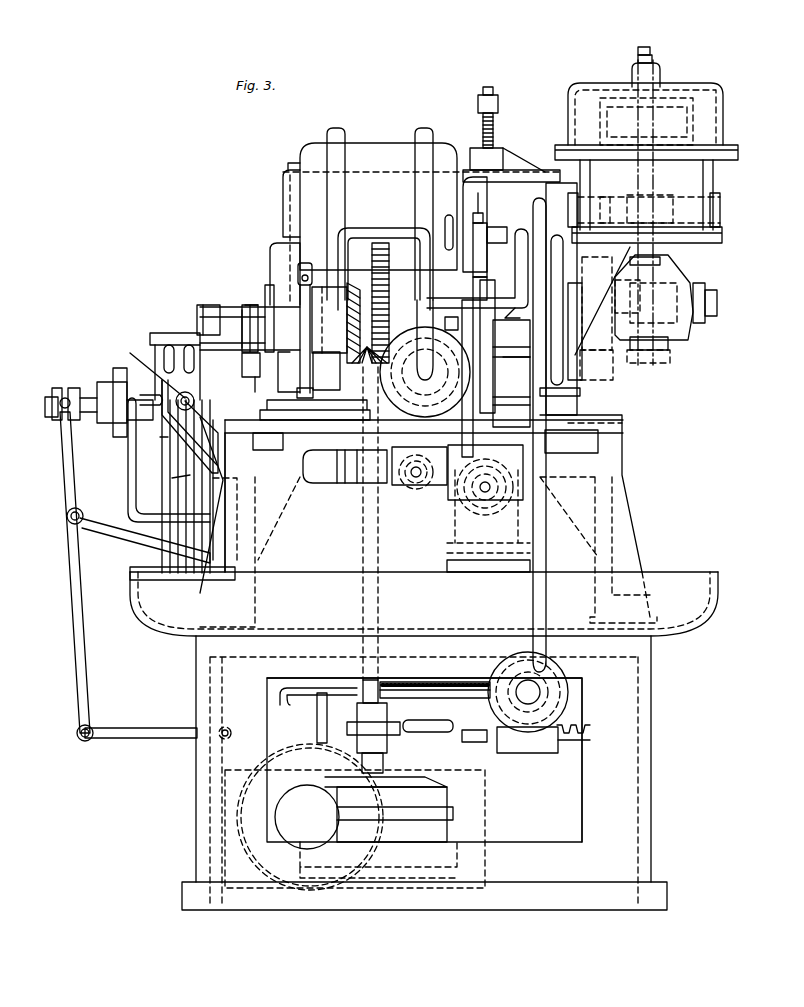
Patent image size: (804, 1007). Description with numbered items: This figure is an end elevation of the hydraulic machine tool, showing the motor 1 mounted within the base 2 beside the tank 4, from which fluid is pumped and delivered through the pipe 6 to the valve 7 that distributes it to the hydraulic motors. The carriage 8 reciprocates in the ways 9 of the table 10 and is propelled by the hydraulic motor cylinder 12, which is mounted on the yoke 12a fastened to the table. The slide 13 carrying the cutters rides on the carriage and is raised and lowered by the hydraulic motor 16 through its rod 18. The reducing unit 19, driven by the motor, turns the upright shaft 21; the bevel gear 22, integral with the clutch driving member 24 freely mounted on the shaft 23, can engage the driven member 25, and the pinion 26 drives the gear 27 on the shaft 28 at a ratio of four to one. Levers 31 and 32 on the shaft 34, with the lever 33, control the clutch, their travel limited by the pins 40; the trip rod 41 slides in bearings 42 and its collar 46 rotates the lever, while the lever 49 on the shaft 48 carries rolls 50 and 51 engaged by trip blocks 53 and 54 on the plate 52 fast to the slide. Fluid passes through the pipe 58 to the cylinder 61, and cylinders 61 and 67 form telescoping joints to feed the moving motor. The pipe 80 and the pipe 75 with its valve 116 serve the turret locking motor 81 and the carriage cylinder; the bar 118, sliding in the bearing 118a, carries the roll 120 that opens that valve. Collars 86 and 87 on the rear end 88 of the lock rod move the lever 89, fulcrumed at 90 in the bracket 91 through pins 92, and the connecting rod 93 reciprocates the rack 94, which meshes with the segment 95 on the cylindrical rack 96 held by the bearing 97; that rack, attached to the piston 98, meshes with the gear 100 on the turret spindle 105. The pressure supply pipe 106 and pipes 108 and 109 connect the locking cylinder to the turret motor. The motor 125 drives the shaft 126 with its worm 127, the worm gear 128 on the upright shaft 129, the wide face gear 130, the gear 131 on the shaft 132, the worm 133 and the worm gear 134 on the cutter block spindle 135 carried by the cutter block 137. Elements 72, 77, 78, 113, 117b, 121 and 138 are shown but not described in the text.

The motor 1 is at (260, 762).
The base 2 is at (173, 636).
The tank 4 is at (583, 790).
The pipe 6 is at (327, 710).
The valve 7 is at (4, 661).
The carriage 8 is at (424, 436).
The ways 9 is at (264, 452).
The table 10 is at (632, 500).
The hydraulic motor cylinder 12 is at (403, 410).
The yoke 12a is at (488, 412).
The slide 13 is at (272, 243).
The hydraulic motor 16 is at (456, 526).
The rod 18 is at (489, 87).
The reducing unit 19 is at (440, 789).
The upright shaft 21 is at (380, 602).
The bevel gear 22 is at (347, 312).
The shaft 23 is at (196, 312).
The clutch driving member 24 is at (329, 320).
The driven member 25 is at (299, 290).
The pinion 26 is at (333, 371).
The gear 27 is at (389, 250).
The shaft 28 is at (454, 326).
The lever 31 is at (284, 378).
The lever 32 is at (306, 262).
The lever 33 is at (246, 366).
The shaft 34 is at (156, 357).
The pins 40 is at (313, 393).
The trip rod 41 is at (152, 376).
The bearings 42 is at (192, 486).
The collar 46 is at (195, 399).
The shaft 48 is at (150, 334).
The lever 49 is at (243, 307).
The roll 50 is at (250, 304).
The roll 51 is at (247, 390).
The plate 52 is at (268, 285).
The trip block 53 is at (240, 365).
The trip block 54 is at (252, 304).
The pipe 58 is at (556, 390).
The cylinder 61 is at (510, 500).
The cylinder 67 is at (414, 490).
The pipe 72 is at (512, 280).
The pipe 75 is at (504, 373).
The nut 77 is at (478, 100).
The screw 78 is at (475, 148).
The pipe 80 is at (128, 452).
The turret locking motor 81 is at (117, 380).
The collar 86 is at (75, 388).
The collar 87 is at (55, 388).
The rear end of rod 88 is at (44, 407).
The lever 89 is at (70, 548).
The fulcrum 90 is at (66, 517).
The bracket 91 is at (122, 534).
The pins 92 is at (65, 397).
The connecting rod 93 is at (146, 739).
The rack 94 is at (585, 727).
The segment 95 is at (560, 738).
The cylindrical rack 96 is at (514, 638).
The bearing 97 is at (522, 753).
The piston 98 is at (566, 690).
The gear 100 is at (448, 700).
The turret spindle 105 is at (418, 732).
The pressure supply pipe 106 is at (178, 454).
The pipe 108 is at (170, 437).
The pipe 109 is at (186, 475).
The block 113 is at (223, 490).
The valve 116 is at (522, 222).
The block 117b is at (495, 280).
The bar 118 is at (461, 224).
The bearing 118a is at (503, 356).
The roll 120 is at (487, 256).
The pin 121 is at (478, 212).
The motor 125 is at (385, 135).
The shaft 126 is at (600, 198).
The worm 127 is at (672, 198).
The worm gear 128 is at (703, 198).
The upright shaft 129 is at (660, 72).
The wide face gear 130 is at (693, 134).
The gear 131 is at (693, 108).
The shaft 132 is at (637, 52).
The worm 133 is at (677, 290).
The worm gear 134 is at (668, 335).
The cutter block spindle 135 is at (700, 290).
The cutter block 137 is at (670, 356).
The elbow 138 is at (521, 322).